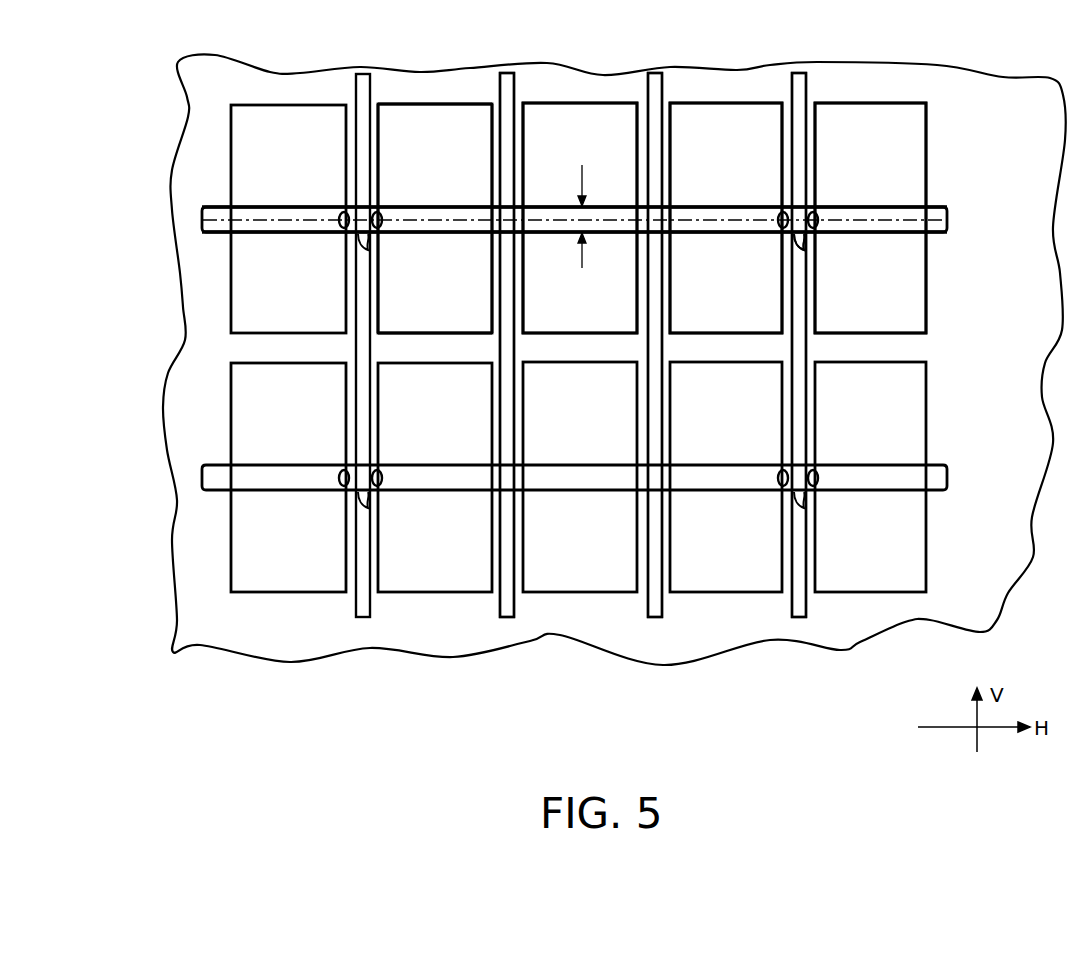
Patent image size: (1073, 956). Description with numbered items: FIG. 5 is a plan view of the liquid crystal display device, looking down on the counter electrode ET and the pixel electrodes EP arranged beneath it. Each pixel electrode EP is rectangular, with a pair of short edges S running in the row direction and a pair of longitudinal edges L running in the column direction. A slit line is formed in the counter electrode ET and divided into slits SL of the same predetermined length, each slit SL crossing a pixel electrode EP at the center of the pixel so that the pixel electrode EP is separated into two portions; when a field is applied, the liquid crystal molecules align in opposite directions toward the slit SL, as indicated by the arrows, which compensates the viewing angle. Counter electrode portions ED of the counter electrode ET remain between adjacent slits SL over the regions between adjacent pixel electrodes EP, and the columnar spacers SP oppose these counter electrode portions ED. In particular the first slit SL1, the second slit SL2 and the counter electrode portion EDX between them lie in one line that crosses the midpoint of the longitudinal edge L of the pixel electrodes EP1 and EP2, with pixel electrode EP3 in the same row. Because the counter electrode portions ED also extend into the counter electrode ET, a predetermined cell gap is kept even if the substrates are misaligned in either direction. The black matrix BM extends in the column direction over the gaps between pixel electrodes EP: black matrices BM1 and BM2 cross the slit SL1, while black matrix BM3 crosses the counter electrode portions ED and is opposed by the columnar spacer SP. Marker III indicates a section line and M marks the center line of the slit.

The black matrix BM is at (364, 76).
The black matrix BM1 is at (508, 619).
The black matrix BM2 is at (655, 615).
The black matrix BM3 is at (798, 615).
The pixel electrode EP is at (578, 347).
The pixel electrode EP1 is at (726, 218).
The pixel electrode EP2 is at (870, 218).
The pixel electrode EP3 is at (580, 218).
The slit SL is at (212, 215).
The first slit SL1 is at (574, 253).
The second slit SL2 is at (612, 233).
The columnar spacer SP is at (362, 210).
The counter electrode portion ED is at (370, 243).
The counter electrode portion EDX is at (846, 264).
The short edge S is at (398, 106).
The longitudinal edge L is at (490, 157).
The center line of signal line M is at (498, 216).
The counter electrode ET is at (201, 637).
The section line III is at (940, 207).